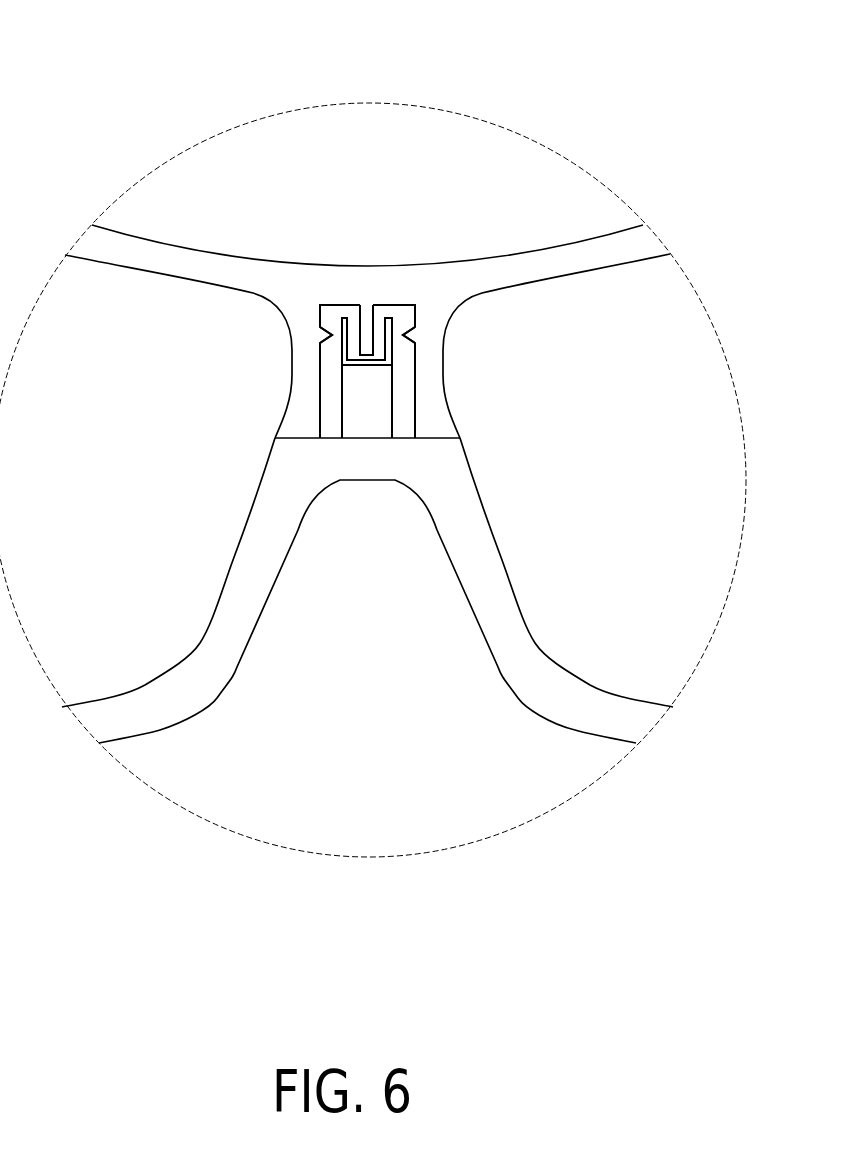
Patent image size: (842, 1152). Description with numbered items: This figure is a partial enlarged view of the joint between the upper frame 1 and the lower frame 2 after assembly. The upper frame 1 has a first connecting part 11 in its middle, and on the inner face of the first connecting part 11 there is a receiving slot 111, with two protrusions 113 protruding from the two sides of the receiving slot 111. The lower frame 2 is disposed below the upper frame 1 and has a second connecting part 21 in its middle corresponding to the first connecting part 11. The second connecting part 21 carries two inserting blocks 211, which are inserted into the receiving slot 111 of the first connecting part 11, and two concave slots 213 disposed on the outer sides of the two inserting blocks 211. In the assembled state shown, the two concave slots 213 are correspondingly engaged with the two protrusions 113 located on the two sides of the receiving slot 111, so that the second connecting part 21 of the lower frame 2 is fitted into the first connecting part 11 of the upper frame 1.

The upper frame 1 is at (323, 278).
The first connecting part 11 is at (443, 393).
The receiving slot 111 is at (408, 323).
The protrusions 113 is at (410, 330).
The lower frame 2 is at (212, 677).
The second connecting part 21 is at (430, 463).
The inserting blocks 211 is at (327, 413).
The concave slots 213 is at (332, 347).